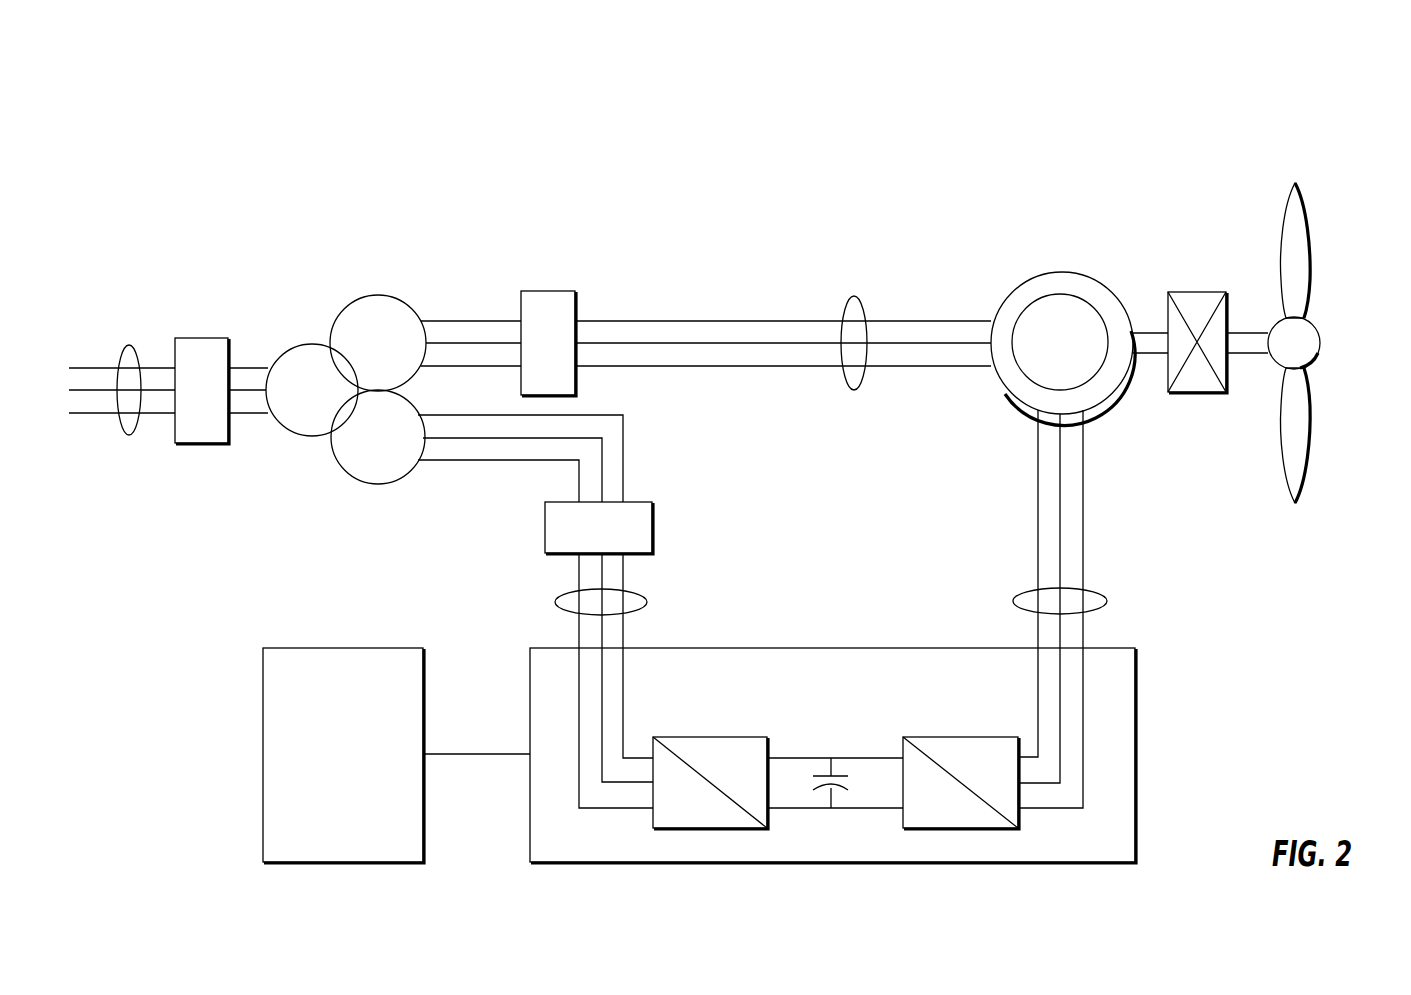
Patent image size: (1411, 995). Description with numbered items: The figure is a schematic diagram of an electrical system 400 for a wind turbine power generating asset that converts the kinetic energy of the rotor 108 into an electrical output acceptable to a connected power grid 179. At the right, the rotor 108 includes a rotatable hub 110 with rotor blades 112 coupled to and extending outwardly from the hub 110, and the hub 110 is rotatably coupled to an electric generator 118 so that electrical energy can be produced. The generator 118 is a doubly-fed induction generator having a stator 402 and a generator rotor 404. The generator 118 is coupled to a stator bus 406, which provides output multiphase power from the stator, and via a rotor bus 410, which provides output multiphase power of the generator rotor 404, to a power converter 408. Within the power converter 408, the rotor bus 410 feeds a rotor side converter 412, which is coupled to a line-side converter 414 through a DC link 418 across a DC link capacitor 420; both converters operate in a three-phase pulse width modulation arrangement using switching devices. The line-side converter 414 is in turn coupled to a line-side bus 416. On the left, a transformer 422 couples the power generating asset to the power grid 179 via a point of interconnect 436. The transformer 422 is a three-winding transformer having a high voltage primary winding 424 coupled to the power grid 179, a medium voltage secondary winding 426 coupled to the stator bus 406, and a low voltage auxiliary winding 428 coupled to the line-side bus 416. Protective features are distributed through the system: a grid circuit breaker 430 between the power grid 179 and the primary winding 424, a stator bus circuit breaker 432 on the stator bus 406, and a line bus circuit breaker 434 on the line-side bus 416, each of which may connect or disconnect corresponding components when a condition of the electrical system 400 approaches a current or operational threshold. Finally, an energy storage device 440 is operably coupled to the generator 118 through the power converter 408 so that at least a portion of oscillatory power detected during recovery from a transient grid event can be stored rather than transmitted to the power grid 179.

The electrical system 400 is at (708, 120).
The rotor 108 is at (1336, 355).
The hub 110 is at (1318, 357).
The rotor blade 112 is at (1310, 293).
The generator 118 is at (1072, 331).
The stator 402 is at (1112, 295).
The generator rotor 404 is at (1095, 376).
The stator bus 406 is at (853, 297).
The power converter 408 is at (1135, 733).
The rotor bus 410 is at (1107, 600).
The rotor side converter 412 is at (975, 830).
The line-side converter 414 is at (690, 830).
The line-side bus 416 is at (650, 598).
The DC link 418 is at (805, 746).
The DC link capacitor 420 is at (838, 790).
The transformer 422 is at (327, 368).
The primary winding 424 is at (293, 438).
The secondary winding 426 is at (378, 295).
The auxiliary winding 428 is at (375, 485).
The grid circuit breaker 430 is at (213, 338).
The stator bus circuit breaker 432 is at (538, 291).
The line bus circuit breaker 434 is at (652, 523).
The point of interconnect 436 is at (157, 420).
The power grid 179 is at (130, 345).
The energy storage device 440 is at (268, 729).